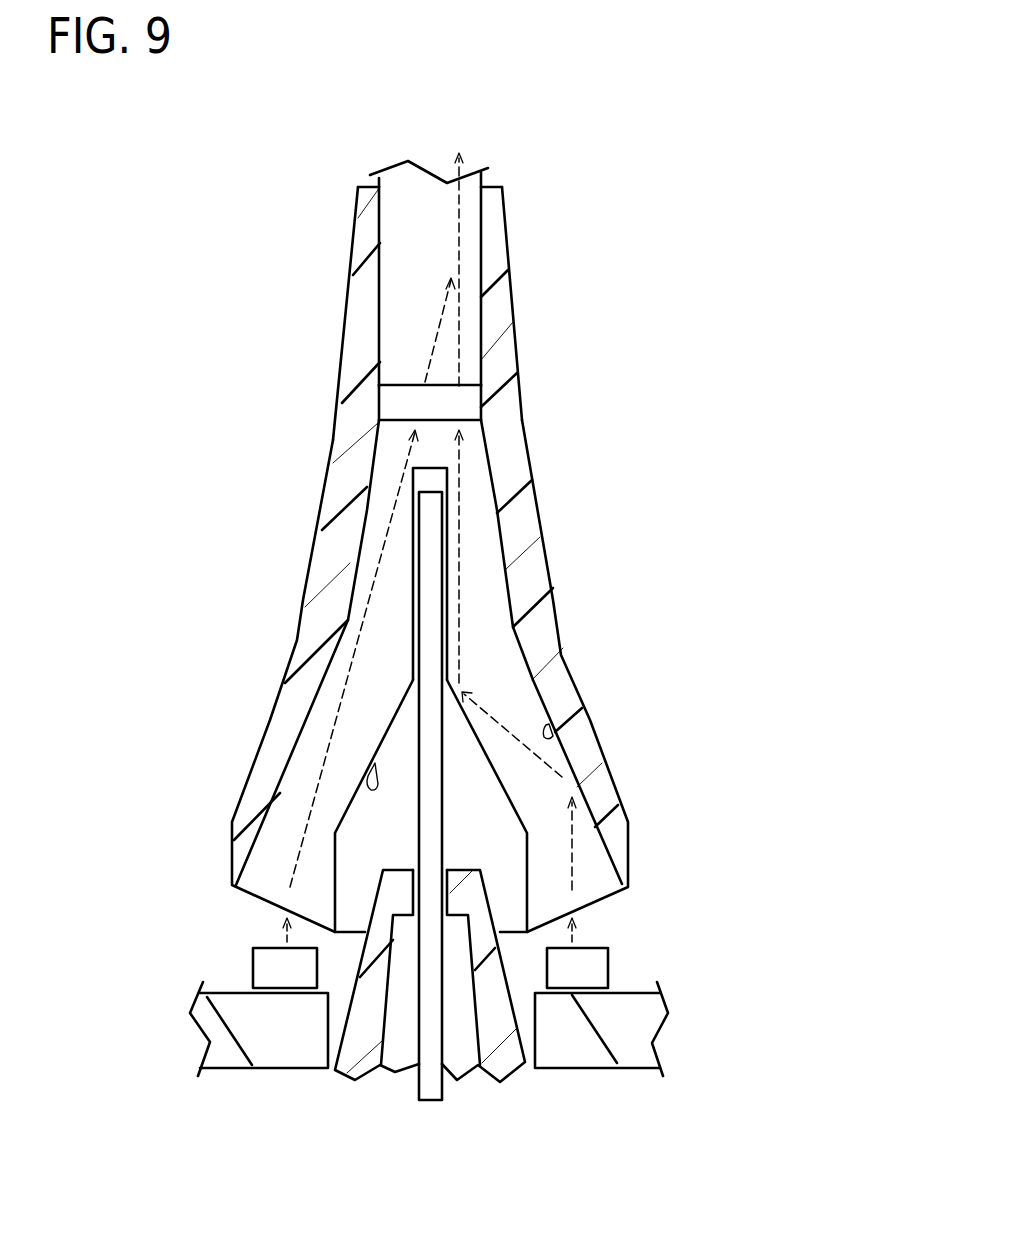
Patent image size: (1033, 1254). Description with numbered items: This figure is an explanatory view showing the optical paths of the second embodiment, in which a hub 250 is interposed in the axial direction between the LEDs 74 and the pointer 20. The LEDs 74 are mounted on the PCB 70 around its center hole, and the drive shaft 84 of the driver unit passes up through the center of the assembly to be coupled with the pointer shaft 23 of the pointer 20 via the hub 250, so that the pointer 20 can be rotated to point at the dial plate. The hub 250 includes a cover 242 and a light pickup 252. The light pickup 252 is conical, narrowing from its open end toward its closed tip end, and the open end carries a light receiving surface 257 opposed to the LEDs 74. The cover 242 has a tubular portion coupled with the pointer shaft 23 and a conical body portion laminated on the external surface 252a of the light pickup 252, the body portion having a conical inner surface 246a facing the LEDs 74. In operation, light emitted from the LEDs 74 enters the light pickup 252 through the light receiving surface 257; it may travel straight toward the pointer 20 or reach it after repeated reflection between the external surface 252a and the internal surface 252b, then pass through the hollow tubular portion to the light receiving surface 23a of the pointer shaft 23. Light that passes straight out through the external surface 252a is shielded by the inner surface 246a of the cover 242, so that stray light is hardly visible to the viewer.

The pointer 20 is at (491, 173).
The pointer shaft 23 is at (485, 266).
The light receiving surface 23a is at (477, 380).
The cover 242 is at (612, 452).
The hub 250 is at (848, 247).
The light pickup 252 is at (599, 648).
The external surface 252a is at (577, 790).
The internal surface 252b is at (362, 778).
The inner surface 246a is at (553, 732).
The light receiving surface 257 is at (262, 890).
The light emitting diode 74 is at (253, 978).
The PCB 70 is at (668, 1017).
The drive shaft 84 is at (444, 1090).